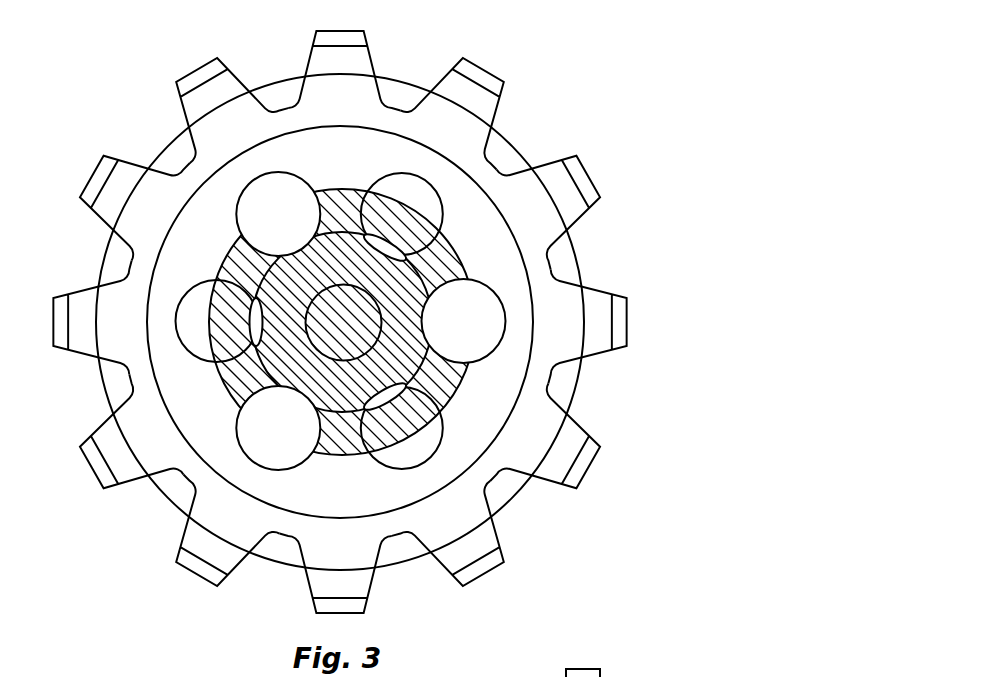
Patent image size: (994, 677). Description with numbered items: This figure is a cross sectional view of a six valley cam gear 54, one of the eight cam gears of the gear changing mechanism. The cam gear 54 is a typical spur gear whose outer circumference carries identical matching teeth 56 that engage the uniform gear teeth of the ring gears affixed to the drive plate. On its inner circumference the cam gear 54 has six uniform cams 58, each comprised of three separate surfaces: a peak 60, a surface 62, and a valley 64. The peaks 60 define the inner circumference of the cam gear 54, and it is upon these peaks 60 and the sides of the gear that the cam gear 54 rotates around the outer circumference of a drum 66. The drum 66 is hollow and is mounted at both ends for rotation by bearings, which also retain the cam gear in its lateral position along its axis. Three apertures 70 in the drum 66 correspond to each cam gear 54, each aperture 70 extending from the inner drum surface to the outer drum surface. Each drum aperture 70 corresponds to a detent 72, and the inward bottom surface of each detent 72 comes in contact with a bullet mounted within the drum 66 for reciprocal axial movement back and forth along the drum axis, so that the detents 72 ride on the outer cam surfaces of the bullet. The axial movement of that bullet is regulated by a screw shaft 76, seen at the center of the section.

The cam gear 54 is at (547, 383).
The teeth 56 is at (578, 470).
The cams 58 is at (445, 427).
The peak 60 is at (453, 258).
The surface 62 is at (450, 217).
The valley 64 is at (458, 156).
The drum 66 is at (397, 190).
The apertures 70 is at (262, 257).
The detent 72 is at (287, 190).
The screw shaft 76 is at (316, 326).